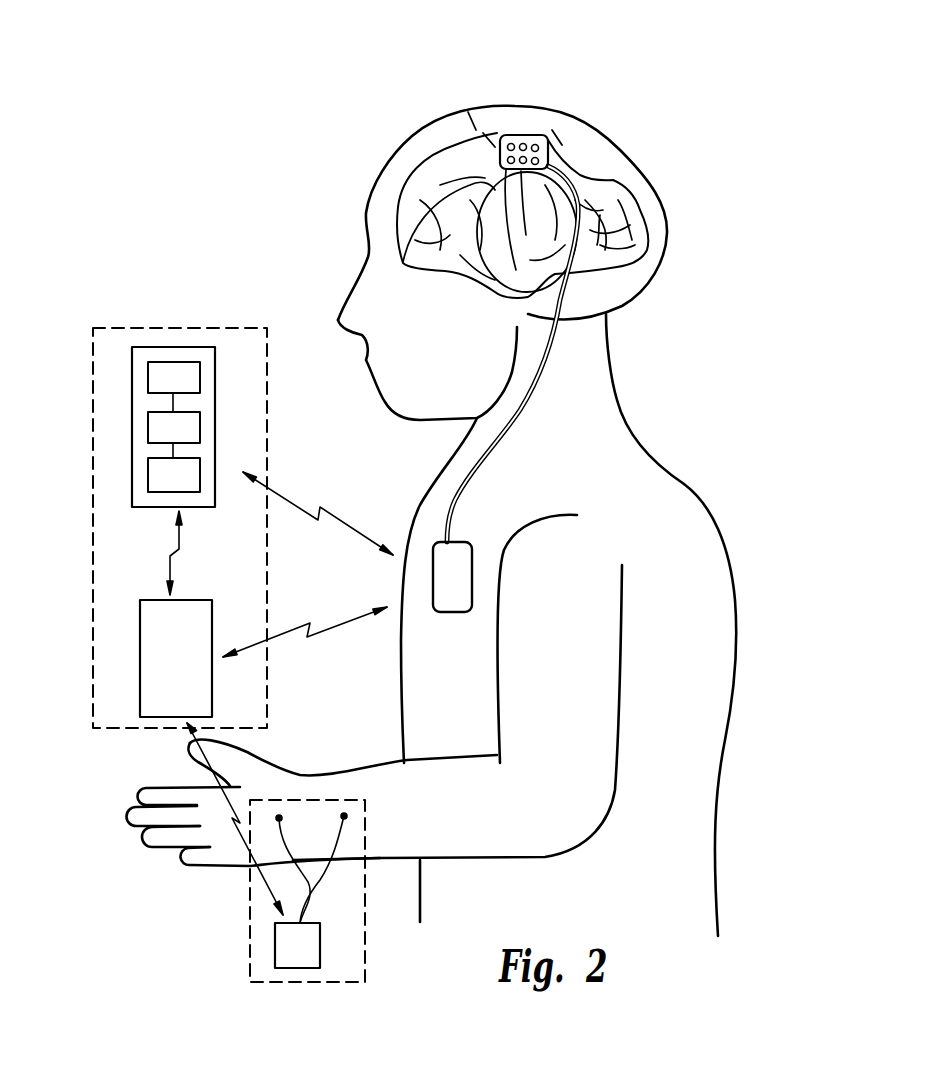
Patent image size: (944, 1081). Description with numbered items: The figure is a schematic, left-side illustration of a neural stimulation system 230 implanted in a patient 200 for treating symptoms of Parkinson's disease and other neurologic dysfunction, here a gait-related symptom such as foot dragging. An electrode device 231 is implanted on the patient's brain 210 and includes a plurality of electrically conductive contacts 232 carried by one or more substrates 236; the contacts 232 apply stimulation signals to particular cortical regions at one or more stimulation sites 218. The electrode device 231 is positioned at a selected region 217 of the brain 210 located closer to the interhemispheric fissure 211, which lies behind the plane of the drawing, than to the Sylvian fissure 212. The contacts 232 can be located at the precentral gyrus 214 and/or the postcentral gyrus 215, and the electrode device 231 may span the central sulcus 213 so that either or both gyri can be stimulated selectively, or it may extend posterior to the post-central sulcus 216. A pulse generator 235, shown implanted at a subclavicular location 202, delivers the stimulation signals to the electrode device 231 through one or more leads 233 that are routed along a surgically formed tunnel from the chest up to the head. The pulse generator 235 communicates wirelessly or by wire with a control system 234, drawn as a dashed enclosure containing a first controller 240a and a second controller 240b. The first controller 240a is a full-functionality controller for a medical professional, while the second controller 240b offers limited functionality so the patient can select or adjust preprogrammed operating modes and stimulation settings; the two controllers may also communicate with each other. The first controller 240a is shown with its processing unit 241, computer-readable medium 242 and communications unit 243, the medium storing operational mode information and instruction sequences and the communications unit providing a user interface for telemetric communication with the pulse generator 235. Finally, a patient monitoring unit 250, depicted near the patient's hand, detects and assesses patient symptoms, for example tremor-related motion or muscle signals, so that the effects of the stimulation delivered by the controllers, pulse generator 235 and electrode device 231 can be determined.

The patient 200 is at (705, 383).
The subclavicular location 202 is at (427, 642).
The brain 210 is at (660, 223).
The interhemispheric fissure 211 is at (486, 126).
The Sylvian fissure 212 is at (563, 322).
The central sulcus 213 is at (545, 133).
The precentral gyrus 214 is at (529, 128).
The postcentral gyrus 215 is at (548, 136).
The post-central sulcus 216 is at (613, 180).
The selected region 217 is at (468, 112).
The stimulation sites 218 is at (482, 192).
The neural stimulation system 230 is at (601, 44).
The electrode device 231 is at (517, 126).
The electrically conductive contacts 232 is at (552, 146).
The leads 233 is at (487, 460).
The control system 234 is at (92, 665).
The pulse generator 235 is at (433, 583).
The substrates 236 is at (517, 282).
The first controller 240a is at (181, 347).
The second controller 240b is at (140, 623).
The processing unit 241 is at (146, 370).
The computer-readable medium 242 is at (146, 420).
The communications unit 243 is at (146, 470).
The patient monitoring unit 250 is at (250, 937).